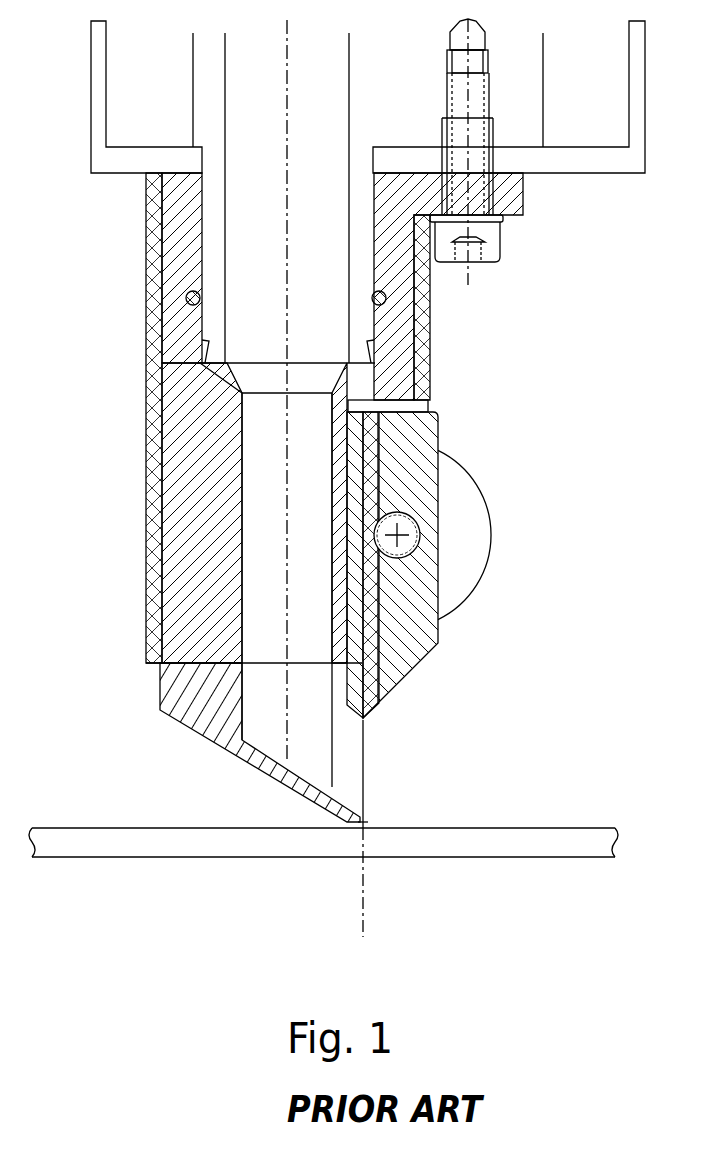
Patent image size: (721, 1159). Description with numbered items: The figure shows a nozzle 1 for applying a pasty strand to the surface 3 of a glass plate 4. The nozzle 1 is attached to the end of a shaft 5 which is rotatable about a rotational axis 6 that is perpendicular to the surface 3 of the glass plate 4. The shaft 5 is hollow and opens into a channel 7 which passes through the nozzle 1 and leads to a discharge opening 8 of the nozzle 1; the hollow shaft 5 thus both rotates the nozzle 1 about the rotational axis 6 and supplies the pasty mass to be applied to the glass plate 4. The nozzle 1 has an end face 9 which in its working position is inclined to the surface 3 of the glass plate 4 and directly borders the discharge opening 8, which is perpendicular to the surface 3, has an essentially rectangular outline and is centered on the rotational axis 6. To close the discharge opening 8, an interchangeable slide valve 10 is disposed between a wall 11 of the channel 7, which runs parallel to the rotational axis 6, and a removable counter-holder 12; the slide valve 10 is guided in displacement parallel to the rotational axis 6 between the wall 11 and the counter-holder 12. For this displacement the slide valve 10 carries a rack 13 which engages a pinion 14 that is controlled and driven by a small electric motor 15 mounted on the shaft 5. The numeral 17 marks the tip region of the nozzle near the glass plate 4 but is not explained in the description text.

The nozzle 1 is at (200, 535).
The surface 3 is at (577, 825).
The glass plate 4 is at (108, 850).
The shaft 5 is at (91, 123).
The rotational axis 6 is at (363, 907).
The channel 7 is at (258, 467).
The discharge opening 8 is at (376, 757).
The end face 9 is at (238, 757).
The slide valve 10 is at (377, 640).
The wall 11 is at (345, 495).
The counter-holder 12 is at (415, 437).
The rack 13 is at (365, 443).
The pinion 14 is at (405, 528).
The electric motor 15 is at (452, 592).
The wire tip 17 is at (364, 821).